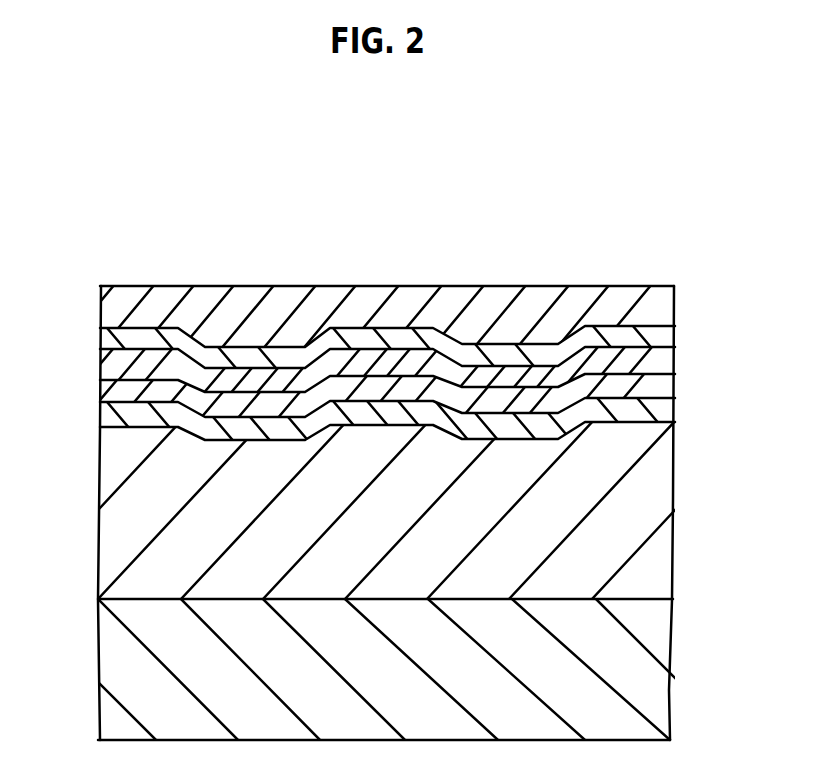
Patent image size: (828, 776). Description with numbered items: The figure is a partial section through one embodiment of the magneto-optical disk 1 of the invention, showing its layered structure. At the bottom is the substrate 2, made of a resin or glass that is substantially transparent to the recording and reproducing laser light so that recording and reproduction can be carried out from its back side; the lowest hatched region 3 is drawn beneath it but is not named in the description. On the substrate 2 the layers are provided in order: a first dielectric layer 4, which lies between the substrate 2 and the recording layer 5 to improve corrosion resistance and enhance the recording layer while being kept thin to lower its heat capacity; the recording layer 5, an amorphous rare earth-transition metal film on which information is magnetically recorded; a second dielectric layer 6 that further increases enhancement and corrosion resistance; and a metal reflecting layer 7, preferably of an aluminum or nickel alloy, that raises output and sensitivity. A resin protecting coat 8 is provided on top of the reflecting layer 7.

The magneto-optical disk 1 is at (573, 210).
The substrate 2 is at (663, 541).
The second base layer 3 is at (660, 667).
The first dielectric layer 4 is at (668, 412).
The recording layer 5 is at (108, 392).
The second dielectric layer 6 is at (675, 360).
The reflecting layer 7 is at (108, 337).
The protecting coat 8 is at (677, 305).